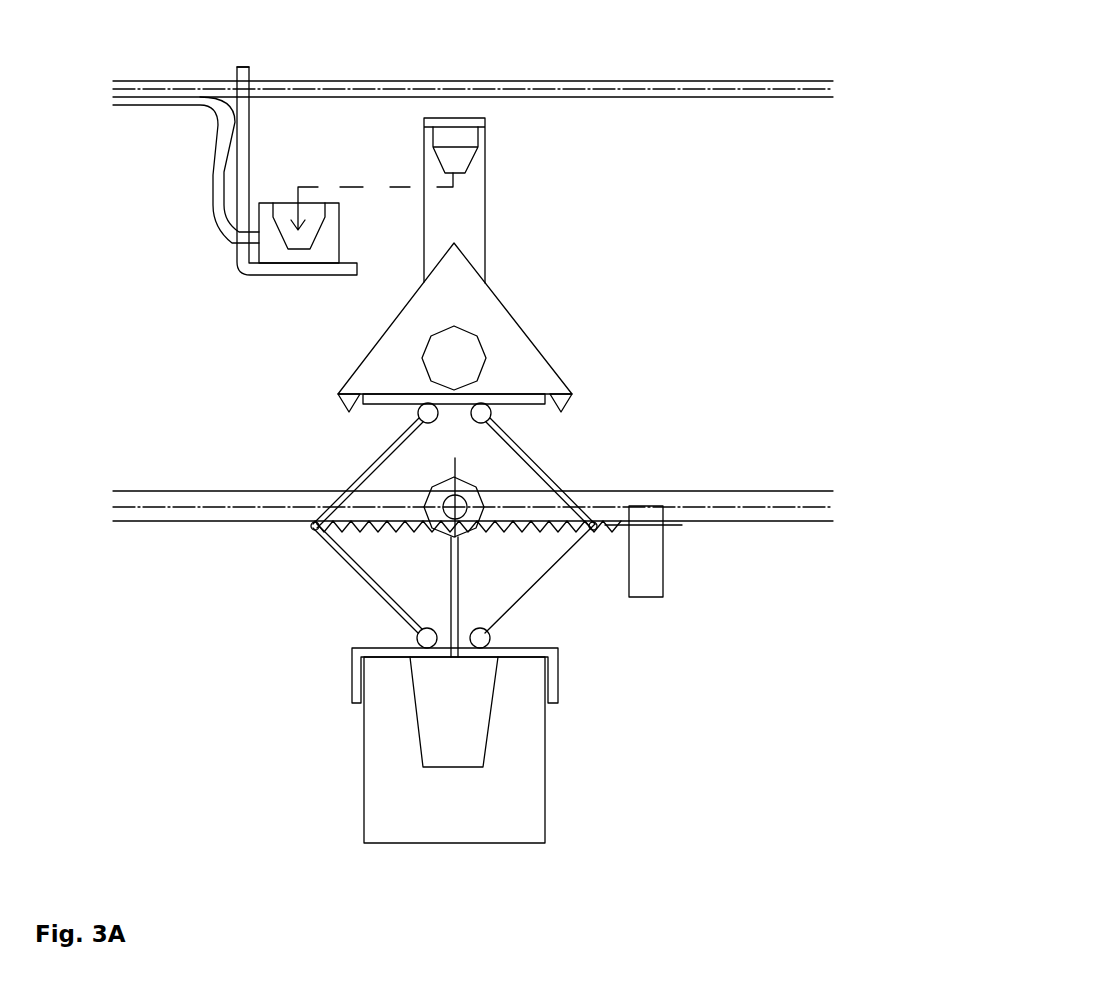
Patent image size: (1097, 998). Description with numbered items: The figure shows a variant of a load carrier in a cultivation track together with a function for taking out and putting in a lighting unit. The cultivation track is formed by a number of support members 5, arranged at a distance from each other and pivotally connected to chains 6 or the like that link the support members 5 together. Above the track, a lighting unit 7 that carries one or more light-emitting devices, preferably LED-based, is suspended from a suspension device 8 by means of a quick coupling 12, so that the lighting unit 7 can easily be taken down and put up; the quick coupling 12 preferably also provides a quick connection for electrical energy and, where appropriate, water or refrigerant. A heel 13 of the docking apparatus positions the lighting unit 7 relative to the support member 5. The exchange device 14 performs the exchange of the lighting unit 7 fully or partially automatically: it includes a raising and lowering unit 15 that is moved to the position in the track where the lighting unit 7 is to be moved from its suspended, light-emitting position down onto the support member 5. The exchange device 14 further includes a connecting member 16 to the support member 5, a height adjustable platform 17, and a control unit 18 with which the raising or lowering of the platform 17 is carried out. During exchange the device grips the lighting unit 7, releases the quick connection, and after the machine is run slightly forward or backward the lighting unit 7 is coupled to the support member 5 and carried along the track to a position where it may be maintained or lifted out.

The support member 5 is at (530, 768).
The chain 6 is at (697, 507).
The lighting unit 7 is at (510, 336).
The suspension device 8 is at (242, 105).
The quick coupling 12 is at (365, 108).
The heel 13 is at (338, 405).
The exchange device 14 is at (272, 595).
The raising and lowering unit 15 is at (252, 458).
The connecting member 16 is at (377, 653).
The height adjustable platform 17 is at (518, 402).
The control unit 18 is at (650, 555).